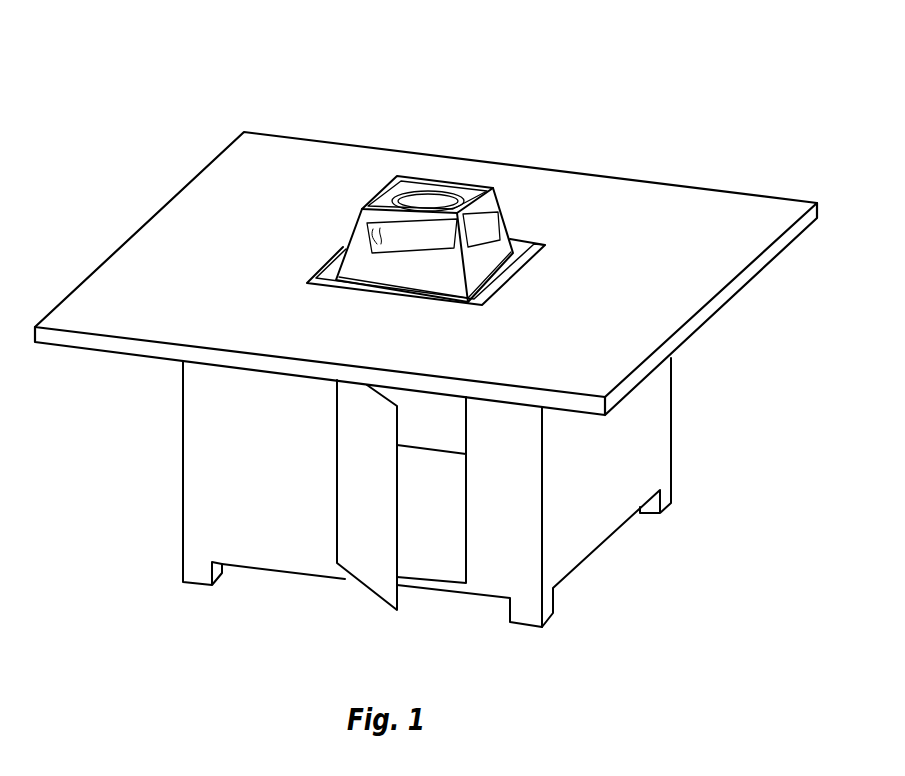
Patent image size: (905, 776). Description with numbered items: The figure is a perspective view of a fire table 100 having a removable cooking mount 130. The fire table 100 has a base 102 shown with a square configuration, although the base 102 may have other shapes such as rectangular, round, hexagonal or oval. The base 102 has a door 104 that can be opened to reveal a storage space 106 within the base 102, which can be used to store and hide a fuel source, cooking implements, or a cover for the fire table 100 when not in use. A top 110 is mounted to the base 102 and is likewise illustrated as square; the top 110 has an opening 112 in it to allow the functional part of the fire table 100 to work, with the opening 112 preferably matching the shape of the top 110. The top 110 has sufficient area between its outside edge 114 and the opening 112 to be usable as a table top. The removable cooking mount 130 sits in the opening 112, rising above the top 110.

The fire table 100 is at (613, 105).
The base 102 is at (671, 428).
The door 104 is at (368, 572).
The storage space 106 is at (428, 562).
The top 110 is at (764, 202).
The opening 112 is at (548, 245).
The outside edge 114 is at (797, 228).
The removable cooking mount 130 is at (445, 176).